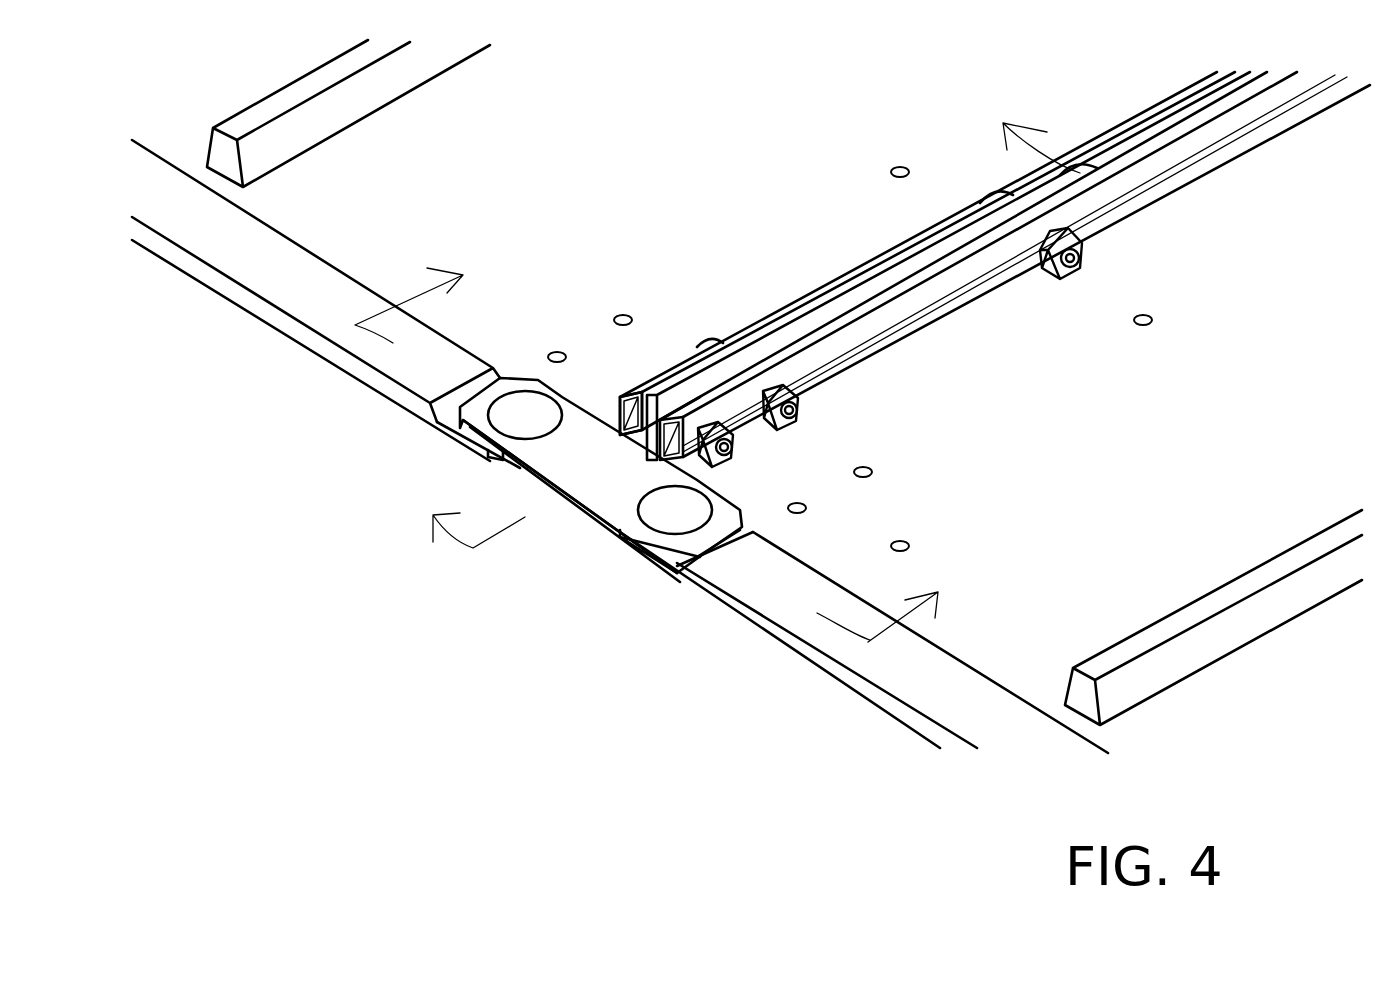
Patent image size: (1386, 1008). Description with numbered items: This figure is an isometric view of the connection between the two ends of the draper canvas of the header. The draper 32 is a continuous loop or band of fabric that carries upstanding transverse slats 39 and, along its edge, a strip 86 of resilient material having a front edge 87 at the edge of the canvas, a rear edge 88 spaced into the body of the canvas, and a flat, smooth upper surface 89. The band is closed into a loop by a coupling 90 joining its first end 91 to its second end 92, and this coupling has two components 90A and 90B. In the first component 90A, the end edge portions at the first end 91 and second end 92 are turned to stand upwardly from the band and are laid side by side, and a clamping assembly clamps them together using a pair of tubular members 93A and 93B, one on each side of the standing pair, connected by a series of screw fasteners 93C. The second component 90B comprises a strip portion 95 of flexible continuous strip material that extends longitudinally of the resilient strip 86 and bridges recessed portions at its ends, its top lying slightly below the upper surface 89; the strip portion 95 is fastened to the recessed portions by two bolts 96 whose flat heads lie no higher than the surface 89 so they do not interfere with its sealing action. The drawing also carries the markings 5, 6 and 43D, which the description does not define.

The direction arrow 5 is at (792, 356).
The direction arrow 6 is at (631, 472).
The draper 32 is at (483, 315).
The slats 39 is at (307, 126).
The connector plate 43D is at (589, 480).
The strip of resilient material 86 is at (864, 644).
The front edge 87 is at (802, 645).
The rear edge 88 is at (942, 645).
The upper surface 89 is at (772, 595).
The coupling 90 is at (973, 283).
The first component of the coupling 90A is at (751, 293).
The second component of the coupling 90B is at (593, 575).
The first end of the band 91 is at (807, 313).
The second end of the band 92 is at (828, 323).
The tubular member 93A is at (630, 393).
The tubular member 93B is at (733, 395).
The screw fasteners 93C is at (818, 395).
The strip portion 95 is at (604, 495).
The bolts 96 is at (505, 423).